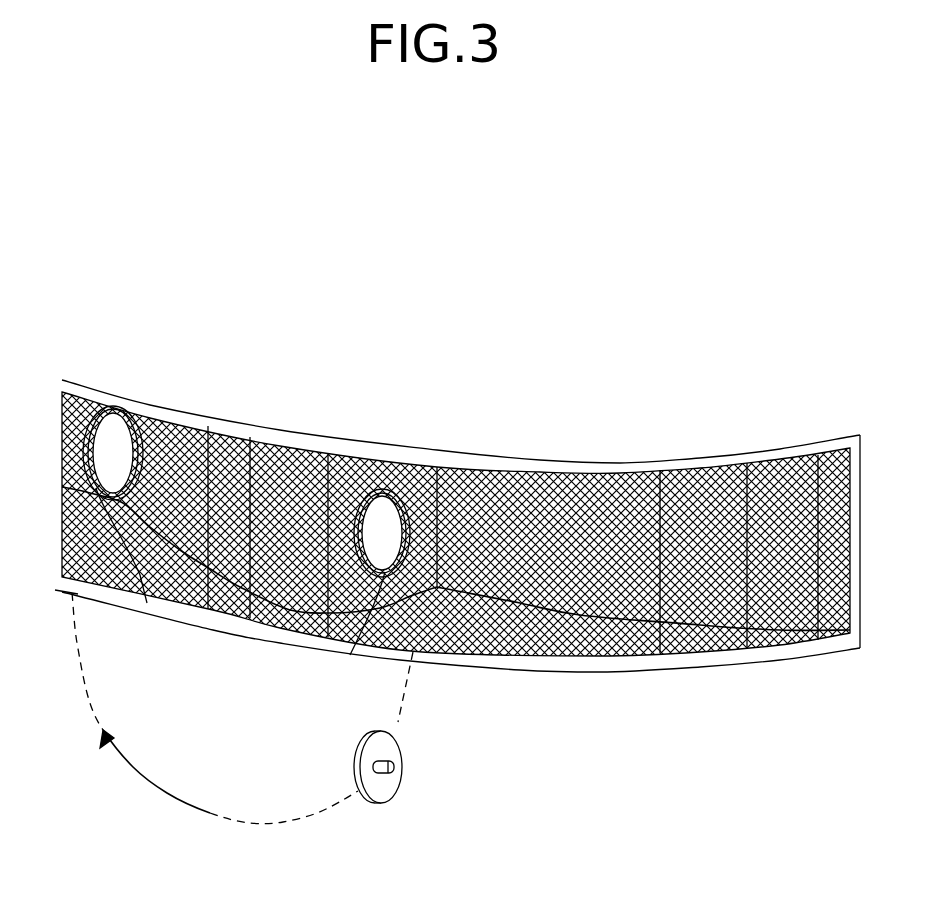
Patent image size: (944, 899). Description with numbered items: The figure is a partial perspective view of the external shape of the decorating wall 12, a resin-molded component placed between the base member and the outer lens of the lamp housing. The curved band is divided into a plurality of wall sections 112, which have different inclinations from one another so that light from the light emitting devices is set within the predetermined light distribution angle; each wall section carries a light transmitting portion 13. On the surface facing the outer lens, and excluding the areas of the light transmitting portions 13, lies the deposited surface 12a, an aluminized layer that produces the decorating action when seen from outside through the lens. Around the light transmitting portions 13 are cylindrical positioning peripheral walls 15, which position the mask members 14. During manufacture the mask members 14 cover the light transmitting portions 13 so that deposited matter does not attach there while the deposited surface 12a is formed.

The decorating wall 12 is at (660, 459).
The deposited surface 12a is at (193, 440).
The wall sections 112 is at (160, 433).
The light transmitting portions 13 is at (117, 413).
The mask members 14 is at (402, 742).
The positioning peripheral walls 15 is at (377, 490).